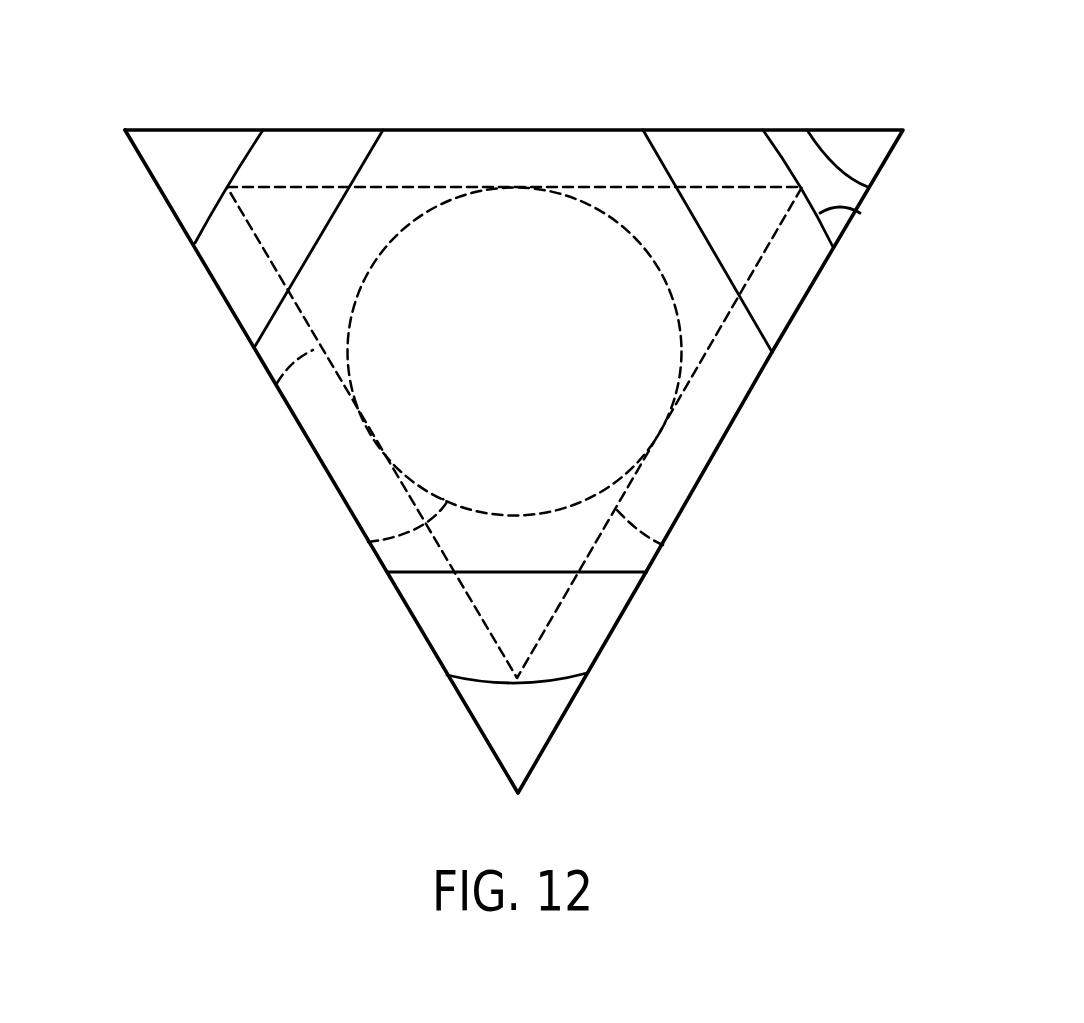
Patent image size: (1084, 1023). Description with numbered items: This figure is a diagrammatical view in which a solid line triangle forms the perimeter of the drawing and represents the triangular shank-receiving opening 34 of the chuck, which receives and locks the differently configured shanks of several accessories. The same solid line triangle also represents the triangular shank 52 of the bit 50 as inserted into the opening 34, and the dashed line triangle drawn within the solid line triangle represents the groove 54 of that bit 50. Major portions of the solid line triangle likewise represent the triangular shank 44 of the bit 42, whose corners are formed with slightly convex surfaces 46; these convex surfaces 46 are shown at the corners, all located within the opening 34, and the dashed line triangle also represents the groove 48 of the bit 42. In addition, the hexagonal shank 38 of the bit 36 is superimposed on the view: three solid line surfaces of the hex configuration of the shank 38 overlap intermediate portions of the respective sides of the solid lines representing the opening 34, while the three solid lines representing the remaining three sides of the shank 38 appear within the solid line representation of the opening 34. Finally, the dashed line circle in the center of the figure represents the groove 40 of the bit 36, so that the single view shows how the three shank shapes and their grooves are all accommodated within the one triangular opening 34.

The bit 50 is at (834, 122).
The triangular shank 52 is at (711, 462).
The shank-receiving opening 34 is at (807, 130).
The bit 36 is at (262, 306).
The hexagonal shank 38 is at (670, 168).
The bit 42 is at (222, 157).
The triangular shank 44 is at (537, 682).
The convex surfaces 46 is at (860, 213).
The groove 40 is at (368, 542).
The groove 48 is at (663, 545).
The groove 54 is at (277, 383).